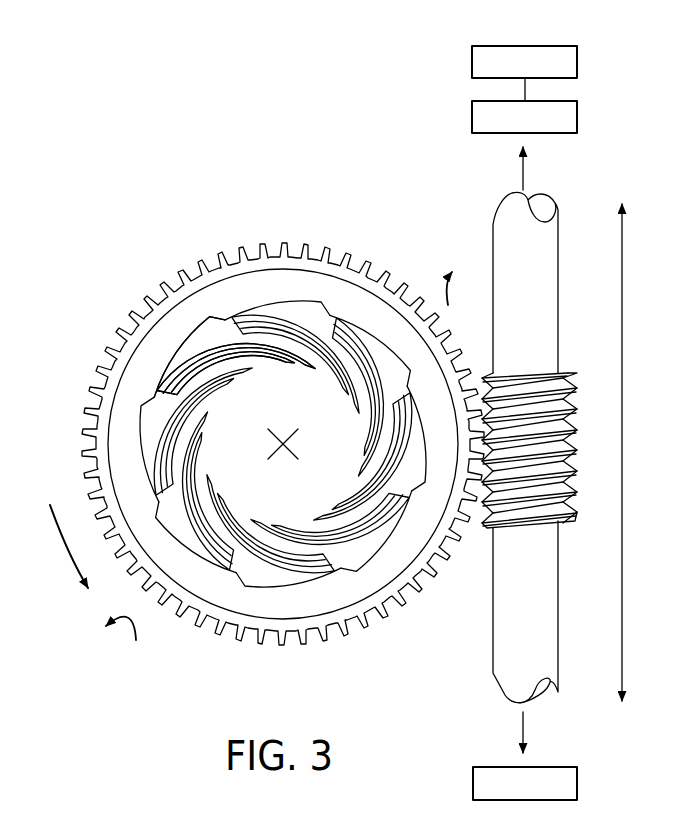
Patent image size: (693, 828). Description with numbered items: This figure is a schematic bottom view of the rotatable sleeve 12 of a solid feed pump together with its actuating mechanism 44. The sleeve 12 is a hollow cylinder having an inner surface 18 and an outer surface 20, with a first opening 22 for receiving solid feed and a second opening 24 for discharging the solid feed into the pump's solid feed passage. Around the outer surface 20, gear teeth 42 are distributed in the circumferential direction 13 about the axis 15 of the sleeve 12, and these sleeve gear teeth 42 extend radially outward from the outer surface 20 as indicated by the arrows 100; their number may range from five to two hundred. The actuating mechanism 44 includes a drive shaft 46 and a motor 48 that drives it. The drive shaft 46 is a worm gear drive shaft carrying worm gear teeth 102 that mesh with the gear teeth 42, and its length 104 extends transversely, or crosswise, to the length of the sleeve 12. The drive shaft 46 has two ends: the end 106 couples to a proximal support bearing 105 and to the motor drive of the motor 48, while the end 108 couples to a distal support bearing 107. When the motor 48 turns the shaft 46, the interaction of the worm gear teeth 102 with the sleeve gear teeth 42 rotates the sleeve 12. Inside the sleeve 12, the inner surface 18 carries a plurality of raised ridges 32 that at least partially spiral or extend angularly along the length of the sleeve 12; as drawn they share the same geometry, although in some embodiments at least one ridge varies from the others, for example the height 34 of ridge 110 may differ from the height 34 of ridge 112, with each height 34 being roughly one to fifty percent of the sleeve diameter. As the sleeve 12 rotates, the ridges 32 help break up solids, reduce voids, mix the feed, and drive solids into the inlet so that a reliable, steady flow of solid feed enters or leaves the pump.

The rotatable sleeve 12 is at (266, 243).
The circumferential direction 13 is at (63, 546).
The axis 15 is at (296, 444).
The inner surface 18 is at (137, 450).
The outer surface 20 is at (148, 322).
The first opening 22 is at (233, 410).
The second opening 24 is at (293, 593).
The ridges 32 is at (226, 350).
The height 34 is at (234, 566).
The gear teeth 42 is at (90, 407).
The actuating mechanism 44 is at (562, 171).
The drive shaft 46 is at (560, 272).
The motor 48 is at (578, 66).
The arrows 100 is at (297, 469).
The worm gear teeth 102 is at (577, 525).
The length 104 is at (620, 450).
The support bearing 105 is at (580, 118).
The end 106 is at (492, 248).
The support bearing 107 is at (578, 785).
The end 108 is at (558, 652).
The ridge 110 is at (224, 582).
The ridge 112 is at (345, 583).